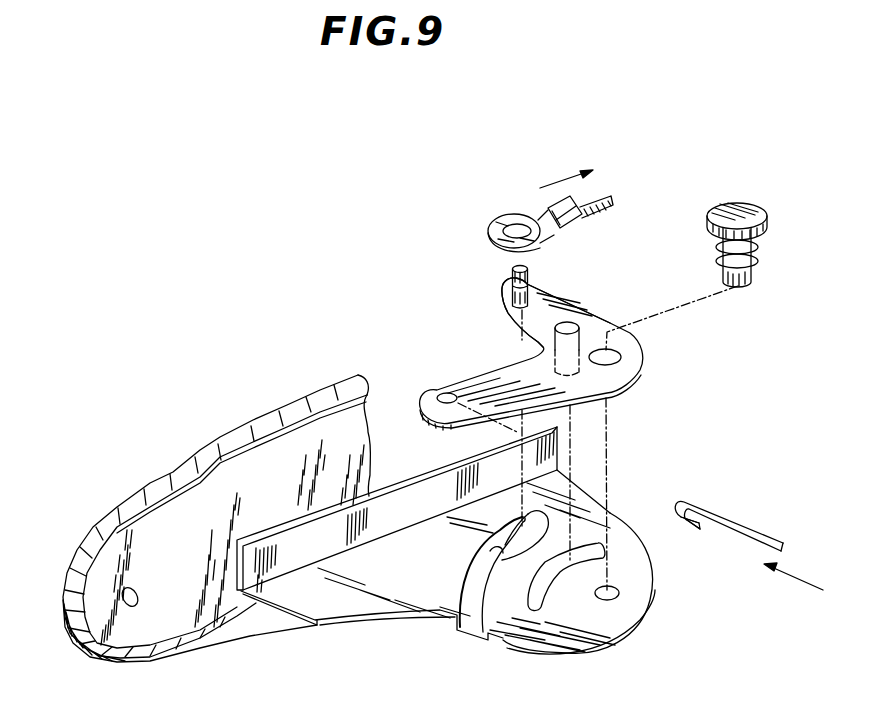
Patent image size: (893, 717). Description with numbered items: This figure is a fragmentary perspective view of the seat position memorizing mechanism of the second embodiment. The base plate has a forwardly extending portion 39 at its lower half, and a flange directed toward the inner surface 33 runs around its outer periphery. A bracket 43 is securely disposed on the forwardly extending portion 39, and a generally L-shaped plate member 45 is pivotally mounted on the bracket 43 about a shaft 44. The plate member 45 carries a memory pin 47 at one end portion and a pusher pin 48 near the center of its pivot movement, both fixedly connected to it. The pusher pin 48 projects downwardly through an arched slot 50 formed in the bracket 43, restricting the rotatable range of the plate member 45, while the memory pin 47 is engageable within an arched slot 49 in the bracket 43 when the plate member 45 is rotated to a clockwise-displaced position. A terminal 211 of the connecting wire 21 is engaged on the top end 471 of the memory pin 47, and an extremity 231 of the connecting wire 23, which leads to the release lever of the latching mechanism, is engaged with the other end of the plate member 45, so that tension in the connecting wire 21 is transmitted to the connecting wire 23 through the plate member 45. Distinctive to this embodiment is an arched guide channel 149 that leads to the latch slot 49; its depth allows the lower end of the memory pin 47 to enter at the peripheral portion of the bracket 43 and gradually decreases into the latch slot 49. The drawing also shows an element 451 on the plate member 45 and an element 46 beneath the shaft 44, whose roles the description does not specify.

The connecting wire 21 is at (605, 208).
The terminal 211 is at (488, 231).
The connecting wire 23 is at (731, 521).
The extremity 231 is at (690, 527).
The inner surface 33 is at (263, 472).
The forwardly extending portion 39 is at (167, 520).
The bracket 43 is at (387, 600).
The shaft 44 is at (738, 207).
The plate member 45 is at (638, 366).
The hole in lever plate 451 is at (443, 395).
The screw thread 46 is at (757, 247).
The memory pin 47 is at (504, 309).
The top end 471 is at (511, 272).
The pusher pin 48 is at (572, 350).
The arched slot 49 is at (508, 552).
The arched slot 50 is at (583, 562).
The arched channel 149 is at (471, 629).